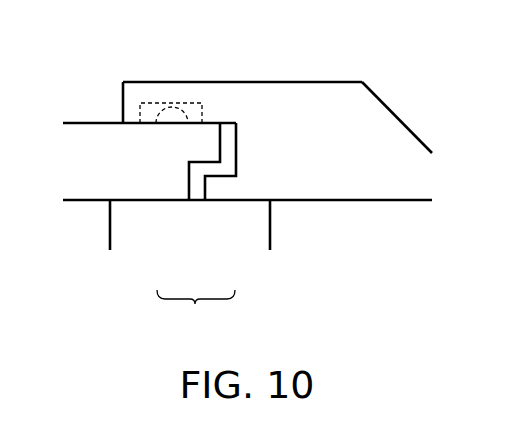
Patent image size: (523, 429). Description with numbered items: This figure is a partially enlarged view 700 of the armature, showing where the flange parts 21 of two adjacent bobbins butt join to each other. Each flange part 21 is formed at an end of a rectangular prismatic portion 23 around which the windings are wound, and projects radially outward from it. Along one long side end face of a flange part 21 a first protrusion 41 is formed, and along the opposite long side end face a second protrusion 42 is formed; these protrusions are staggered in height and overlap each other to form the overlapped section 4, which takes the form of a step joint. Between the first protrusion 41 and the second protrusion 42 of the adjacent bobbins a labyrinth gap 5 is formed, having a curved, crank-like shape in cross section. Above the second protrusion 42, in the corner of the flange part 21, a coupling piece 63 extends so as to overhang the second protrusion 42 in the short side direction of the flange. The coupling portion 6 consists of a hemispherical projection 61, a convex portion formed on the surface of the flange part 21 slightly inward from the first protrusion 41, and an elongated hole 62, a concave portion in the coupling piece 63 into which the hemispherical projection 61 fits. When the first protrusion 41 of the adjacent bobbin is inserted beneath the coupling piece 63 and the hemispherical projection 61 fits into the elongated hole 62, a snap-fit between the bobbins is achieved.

The partially enlarged view 700 is at (398, 72).
The coupling portion 6 is at (102, 88).
The coupling piece 63 is at (283, 95).
The elongated hole 62 is at (148, 112).
The hemispherical projection 61 is at (170, 108).
The labyrinth gap 5 is at (228, 147).
The overlapped section 4 is at (196, 227).
The first protrusion 41 is at (203, 150).
The second protrusion 42 is at (220, 185).
The flange part 21 is at (75, 172).
The rectangular prismatic portion 23 is at (112, 218).